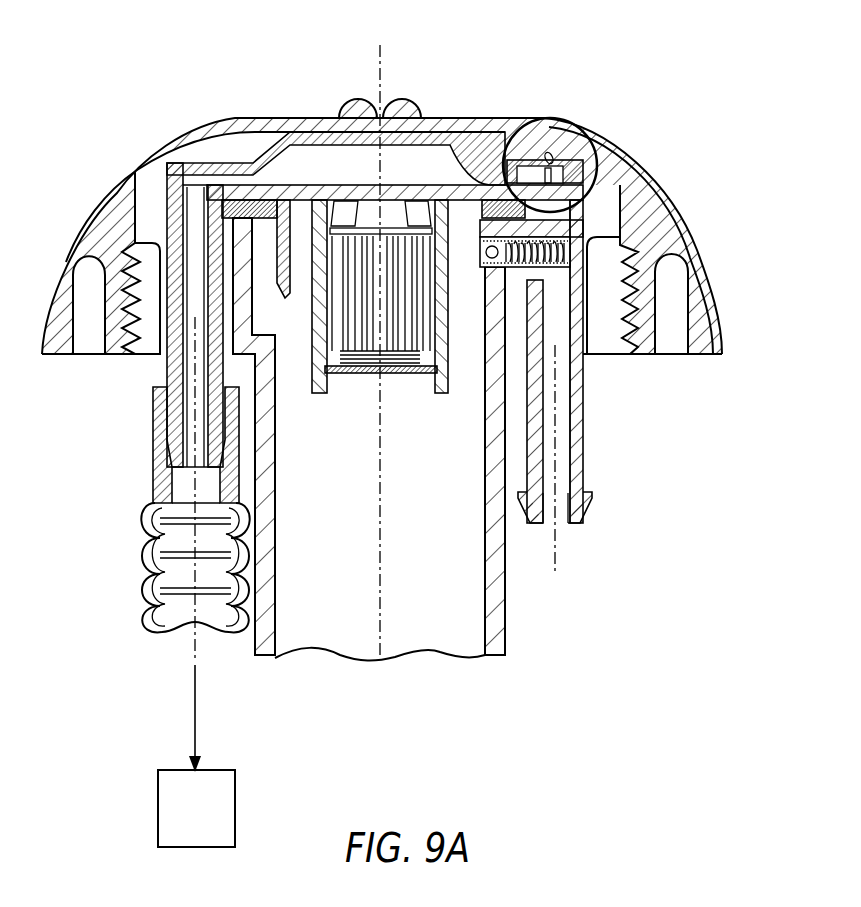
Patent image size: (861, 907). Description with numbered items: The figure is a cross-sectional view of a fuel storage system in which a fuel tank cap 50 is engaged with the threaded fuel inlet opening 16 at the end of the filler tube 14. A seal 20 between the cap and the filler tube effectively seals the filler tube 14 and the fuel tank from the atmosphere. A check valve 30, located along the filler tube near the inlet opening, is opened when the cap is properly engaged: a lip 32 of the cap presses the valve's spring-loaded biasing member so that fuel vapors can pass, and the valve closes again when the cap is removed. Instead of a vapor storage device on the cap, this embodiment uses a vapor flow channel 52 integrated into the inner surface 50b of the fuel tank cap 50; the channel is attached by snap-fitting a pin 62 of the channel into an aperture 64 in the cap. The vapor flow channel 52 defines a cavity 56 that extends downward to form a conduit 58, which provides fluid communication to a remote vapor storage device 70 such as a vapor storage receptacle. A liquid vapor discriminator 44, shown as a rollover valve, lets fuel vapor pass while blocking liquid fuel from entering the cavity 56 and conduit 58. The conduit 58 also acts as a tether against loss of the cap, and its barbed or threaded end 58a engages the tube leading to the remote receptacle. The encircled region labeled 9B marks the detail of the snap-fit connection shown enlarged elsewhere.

The filler tube 14 is at (507, 621).
The fuel inlet opening 16 is at (636, 176).
The seal 20 is at (240, 200).
The check valve 30 is at (550, 274).
The lip 32 is at (460, 275).
The liquid vapor discriminator 44 is at (360, 374).
The fuel tank cap 50 is at (409, 236).
The inner surface 50b is at (133, 163).
The vapor flow channel 52 is at (438, 130).
The cavity 56 is at (364, 177).
The conduit 58 is at (163, 375).
The barbed or threaded end 58a is at (157, 450).
The pin 62 is at (403, 90).
The aperture 64 is at (355, 87).
The remote vapor storage device 70 is at (196, 756).
The detail view callout 9B is at (591, 132).